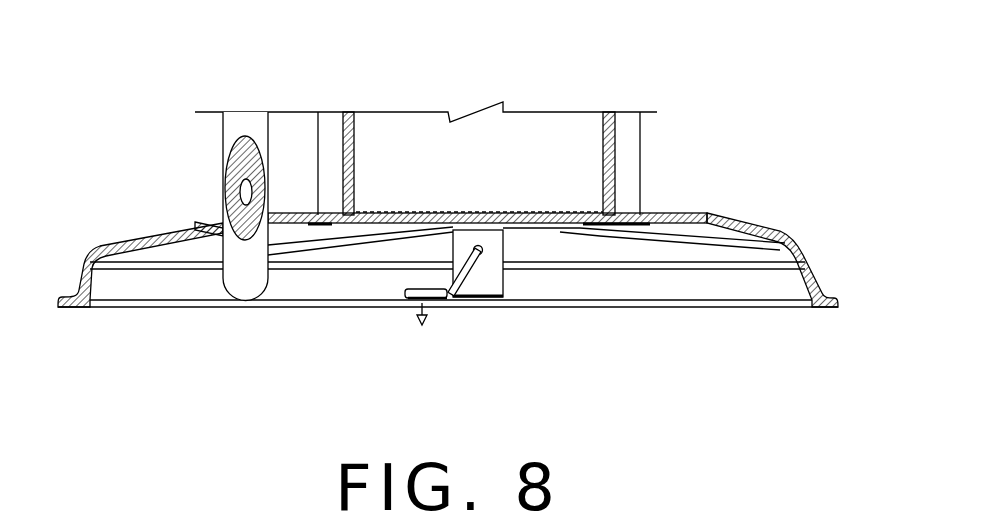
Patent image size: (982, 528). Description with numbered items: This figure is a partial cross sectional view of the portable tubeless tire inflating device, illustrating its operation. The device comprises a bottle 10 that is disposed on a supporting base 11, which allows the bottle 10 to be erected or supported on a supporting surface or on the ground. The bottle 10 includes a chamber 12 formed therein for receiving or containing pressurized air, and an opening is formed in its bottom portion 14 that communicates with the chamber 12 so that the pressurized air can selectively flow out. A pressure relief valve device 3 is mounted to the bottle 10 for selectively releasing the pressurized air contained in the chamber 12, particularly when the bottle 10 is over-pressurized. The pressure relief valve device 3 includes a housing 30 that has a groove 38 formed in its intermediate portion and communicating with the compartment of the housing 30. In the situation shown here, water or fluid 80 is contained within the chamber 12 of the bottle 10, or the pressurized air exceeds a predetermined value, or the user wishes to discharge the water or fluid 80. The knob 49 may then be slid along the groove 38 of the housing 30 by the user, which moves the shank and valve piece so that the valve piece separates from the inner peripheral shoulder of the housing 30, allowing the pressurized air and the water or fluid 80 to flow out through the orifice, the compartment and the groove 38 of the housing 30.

The bottle 10 is at (615, 150).
The chamber 12 is at (604, 127).
The water or fluid 80 is at (400, 211).
The bottom portion 14 is at (617, 212).
The supporting base 11 is at (797, 250).
The housing 30 is at (505, 283).
The groove 38 is at (483, 248).
The knob 49 is at (463, 275).
The pressure relief valve device 3 is at (496, 310).